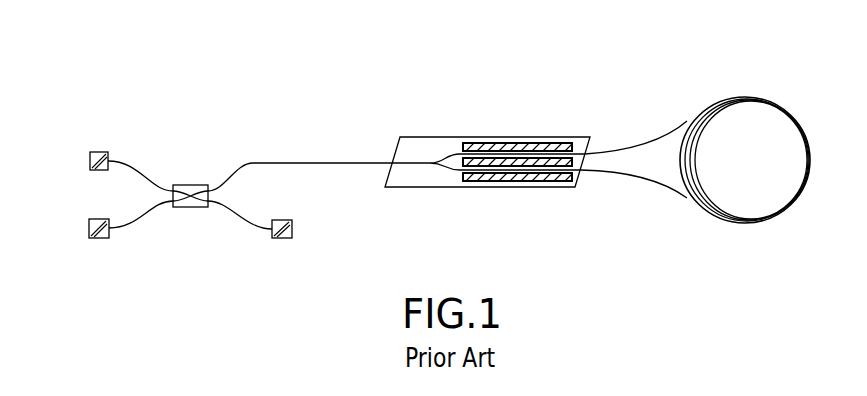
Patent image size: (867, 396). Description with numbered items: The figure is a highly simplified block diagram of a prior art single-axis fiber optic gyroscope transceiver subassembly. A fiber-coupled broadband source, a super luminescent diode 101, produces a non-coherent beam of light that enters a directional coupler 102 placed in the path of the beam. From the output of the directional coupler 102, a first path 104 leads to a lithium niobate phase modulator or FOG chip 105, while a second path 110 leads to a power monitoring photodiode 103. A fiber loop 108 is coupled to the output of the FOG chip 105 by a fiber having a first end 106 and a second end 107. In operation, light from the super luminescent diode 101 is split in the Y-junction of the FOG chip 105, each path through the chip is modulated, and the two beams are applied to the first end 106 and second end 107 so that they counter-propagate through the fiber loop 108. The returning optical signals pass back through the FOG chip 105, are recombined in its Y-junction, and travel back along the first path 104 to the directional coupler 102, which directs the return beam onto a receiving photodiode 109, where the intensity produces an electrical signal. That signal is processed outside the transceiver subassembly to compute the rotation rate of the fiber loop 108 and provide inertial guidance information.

The super luminescent diode 101 is at (90, 157).
The directional coupler 102 is at (191, 207).
The power monitoring photodiode 103 is at (292, 228).
The first path 104 is at (320, 160).
The FOG chip 105 is at (493, 138).
The first end 106 is at (650, 146).
The second end 107 is at (632, 175).
The fiber loop 108 is at (777, 106).
The receiving photodiode 109 is at (89, 226).
The second path 110 is at (237, 212).